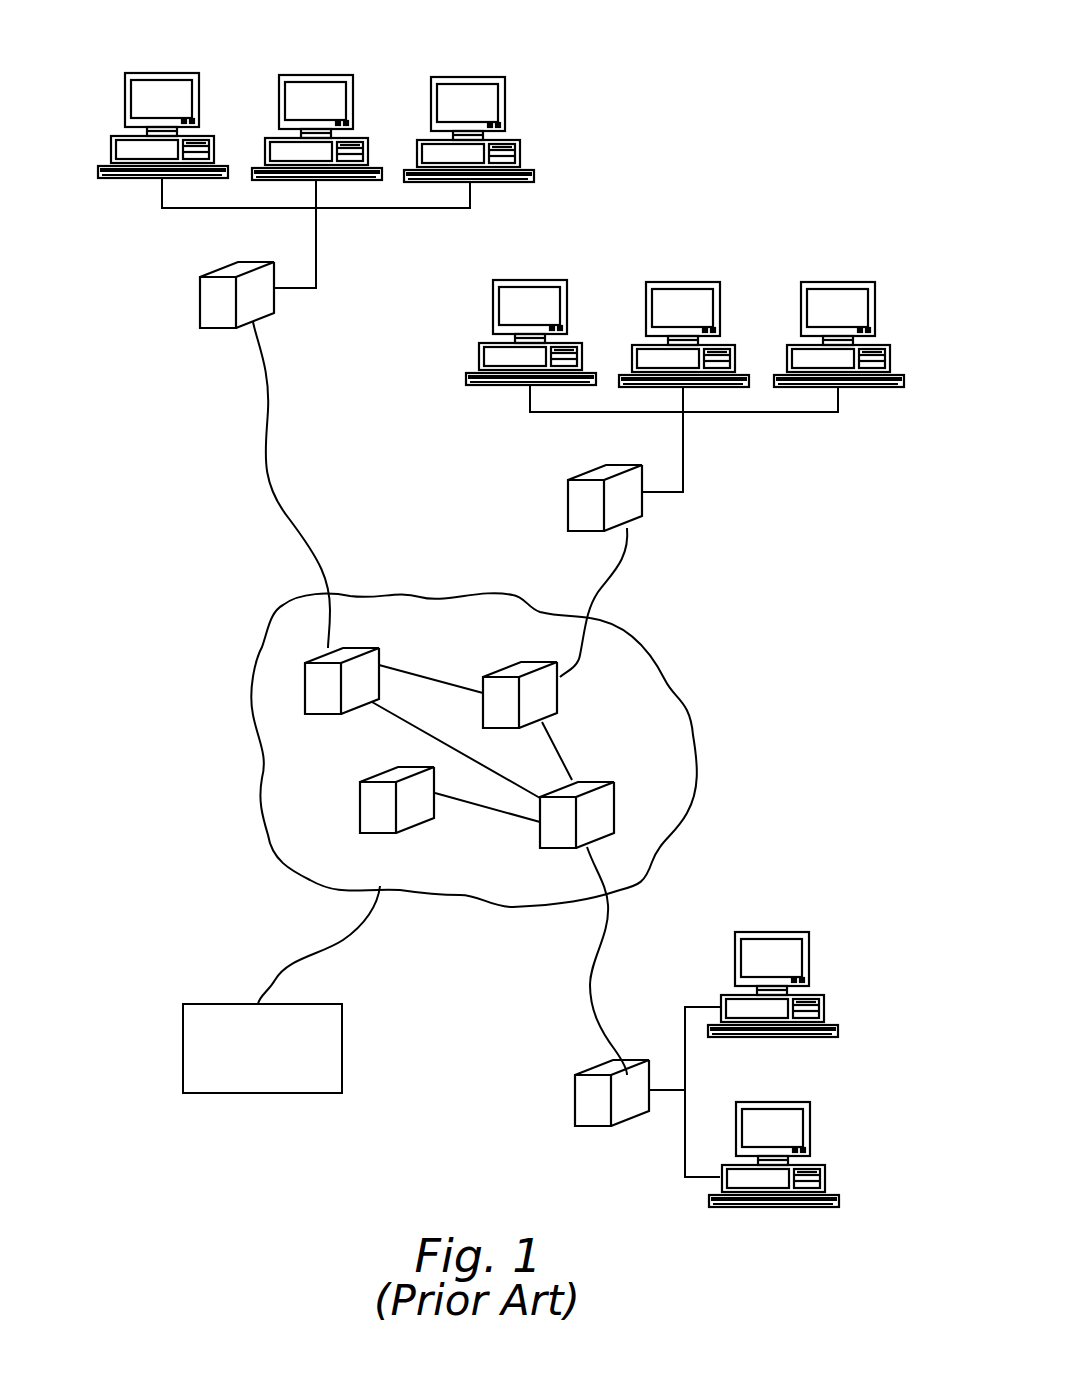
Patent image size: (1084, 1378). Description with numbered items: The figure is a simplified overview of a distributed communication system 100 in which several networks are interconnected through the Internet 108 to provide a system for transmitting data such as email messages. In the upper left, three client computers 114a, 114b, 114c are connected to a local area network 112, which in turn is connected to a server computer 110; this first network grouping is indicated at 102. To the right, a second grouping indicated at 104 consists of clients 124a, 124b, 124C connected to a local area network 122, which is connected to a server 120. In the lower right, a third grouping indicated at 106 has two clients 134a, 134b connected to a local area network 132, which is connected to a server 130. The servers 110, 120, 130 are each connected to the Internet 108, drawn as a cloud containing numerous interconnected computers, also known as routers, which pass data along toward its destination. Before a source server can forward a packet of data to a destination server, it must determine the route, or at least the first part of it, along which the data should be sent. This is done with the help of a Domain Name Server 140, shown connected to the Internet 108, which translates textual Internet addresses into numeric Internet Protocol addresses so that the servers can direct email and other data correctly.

The distributed communication system 100 is at (654, 93).
The first local area network 102 is at (165, 240).
The second local area network 104 is at (749, 493).
The third local area network 106 is at (823, 947).
The Internet 108 is at (443, 644).
The server computer 110 is at (218, 330).
The local area network 112 is at (362, 211).
The client computer 114a is at (171, 72).
The client computer 114b is at (318, 74).
The client computer 114c is at (471, 77).
The server computer 120 is at (568, 505).
The local area network 122 is at (782, 413).
The client computer 124a is at (545, 280).
The client computer 124b is at (685, 282).
The client computer 124C is at (837, 282).
The server computer 130 is at (590, 1125).
The local area network 132 is at (685, 1165).
The client computer 134a is at (745, 932).
The client computer 134b is at (767, 1208).
The Domain Name Server 140 is at (250, 1095).